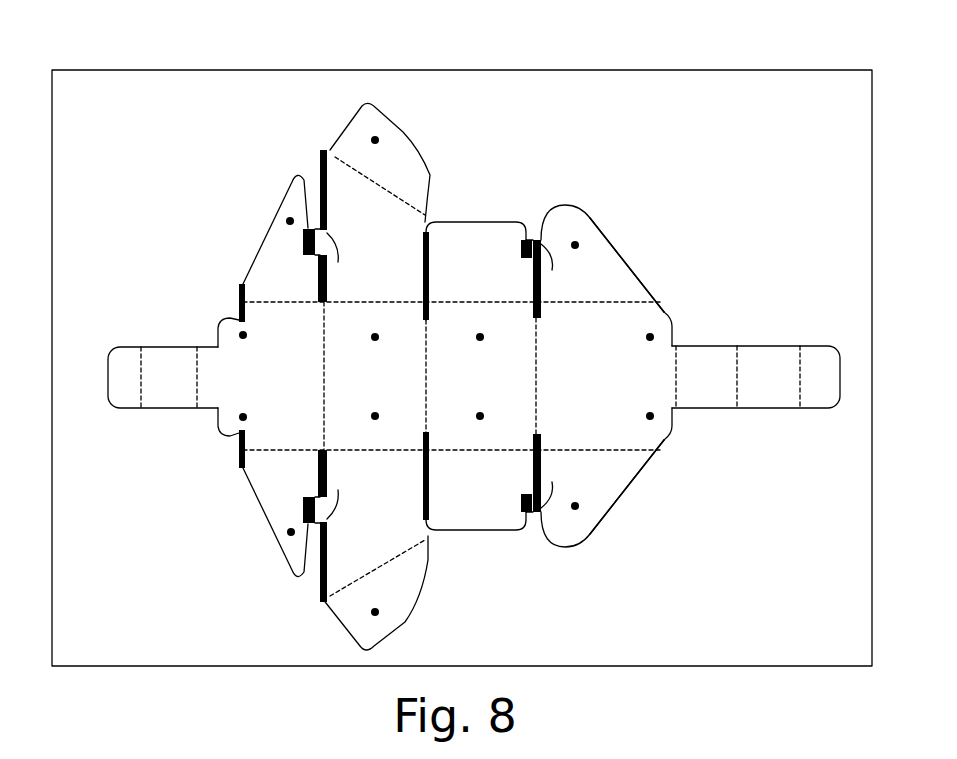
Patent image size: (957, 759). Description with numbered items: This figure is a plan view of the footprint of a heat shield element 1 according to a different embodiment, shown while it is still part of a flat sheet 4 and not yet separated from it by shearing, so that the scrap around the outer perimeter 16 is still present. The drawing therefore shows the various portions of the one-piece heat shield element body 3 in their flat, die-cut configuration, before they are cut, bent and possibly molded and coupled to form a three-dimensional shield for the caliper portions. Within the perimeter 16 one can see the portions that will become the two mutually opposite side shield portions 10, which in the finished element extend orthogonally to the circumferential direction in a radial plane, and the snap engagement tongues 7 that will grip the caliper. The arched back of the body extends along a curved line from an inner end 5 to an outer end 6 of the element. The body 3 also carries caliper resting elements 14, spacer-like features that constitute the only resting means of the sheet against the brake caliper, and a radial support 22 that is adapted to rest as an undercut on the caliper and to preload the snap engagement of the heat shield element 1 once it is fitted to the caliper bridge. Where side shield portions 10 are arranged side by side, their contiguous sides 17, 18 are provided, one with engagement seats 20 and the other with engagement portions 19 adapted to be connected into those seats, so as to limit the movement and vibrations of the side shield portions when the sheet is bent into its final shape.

The heat shield element 1 is at (646, 118).
The heat shield element body 3 is at (625, 287).
The flat sheet 4 is at (185, 638).
The inner end 5 is at (205, 440).
The outer end 6 is at (675, 333).
The snap engagement tongues 7 is at (160, 366).
The side shield portions 10 is at (262, 250).
The caliper resting elements 14 is at (288, 218).
The outer perimeter 16 is at (670, 455).
The contiguous side 17 is at (327, 198).
The contiguous side 18 is at (315, 228).
The engagement portions 19 is at (338, 262).
The engagement seats 20 is at (305, 252).
The radial support 22 is at (364, 105).